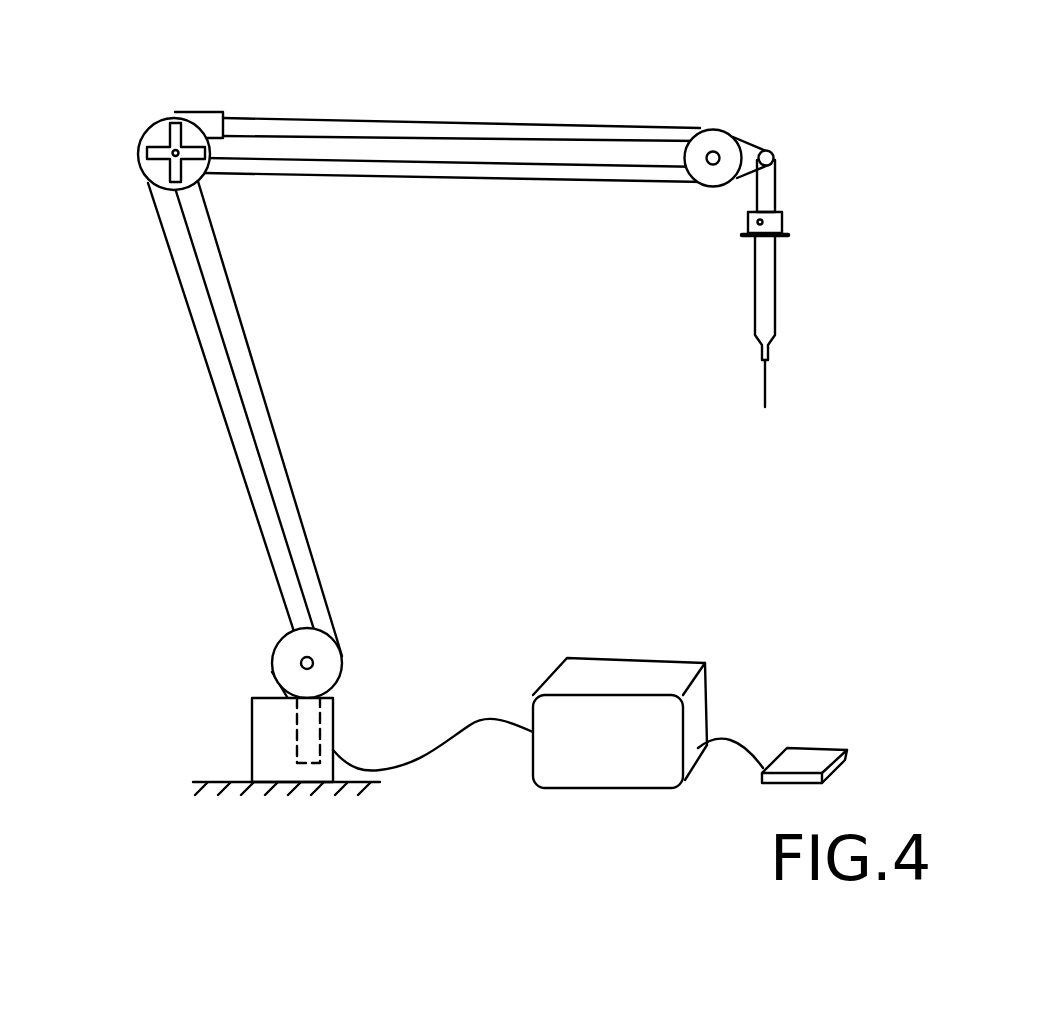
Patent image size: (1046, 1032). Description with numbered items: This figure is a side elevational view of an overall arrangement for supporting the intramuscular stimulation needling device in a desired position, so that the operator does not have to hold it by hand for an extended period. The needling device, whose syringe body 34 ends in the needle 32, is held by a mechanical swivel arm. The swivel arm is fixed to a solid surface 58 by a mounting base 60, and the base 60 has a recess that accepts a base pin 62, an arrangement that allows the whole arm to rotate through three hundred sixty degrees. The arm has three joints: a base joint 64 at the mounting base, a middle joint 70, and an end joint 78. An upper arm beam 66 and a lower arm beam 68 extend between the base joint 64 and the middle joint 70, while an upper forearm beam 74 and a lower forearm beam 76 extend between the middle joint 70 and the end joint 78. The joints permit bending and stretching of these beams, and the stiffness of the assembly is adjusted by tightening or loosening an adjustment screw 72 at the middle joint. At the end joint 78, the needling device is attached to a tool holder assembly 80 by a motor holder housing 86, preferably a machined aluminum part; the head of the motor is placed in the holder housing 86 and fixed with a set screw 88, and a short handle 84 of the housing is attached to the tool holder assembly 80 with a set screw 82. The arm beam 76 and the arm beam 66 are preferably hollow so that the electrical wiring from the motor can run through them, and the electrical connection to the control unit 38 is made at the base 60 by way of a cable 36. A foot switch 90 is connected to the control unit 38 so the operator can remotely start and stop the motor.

The needle 32 is at (765, 383).
The syringe body 34 is at (765, 297).
The electrical cable 36 is at (358, 760).
The control unit 38 is at (648, 675).
The solid surface 58 is at (228, 782).
The mounting base 60 is at (270, 725).
The base pin 62 is at (272, 673).
The base joint 64 is at (330, 650).
The upper arm beam 66 is at (285, 508).
The lower arm beam 68 is at (250, 457).
The middle joint 70 is at (156, 125).
The adjustment screw 72 is at (177, 122).
The upper forearm beam 74 is at (312, 118).
The lower forearm beam 76 is at (468, 172).
The end joint 78 is at (720, 181).
The tool holder assembly 80 is at (748, 150).
The set screw 82 is at (773, 148).
The short handle 84 is at (772, 183).
The motor holder housing 86 is at (783, 220).
The set screw 88 is at (745, 236).
The foot switch 90 is at (815, 758).